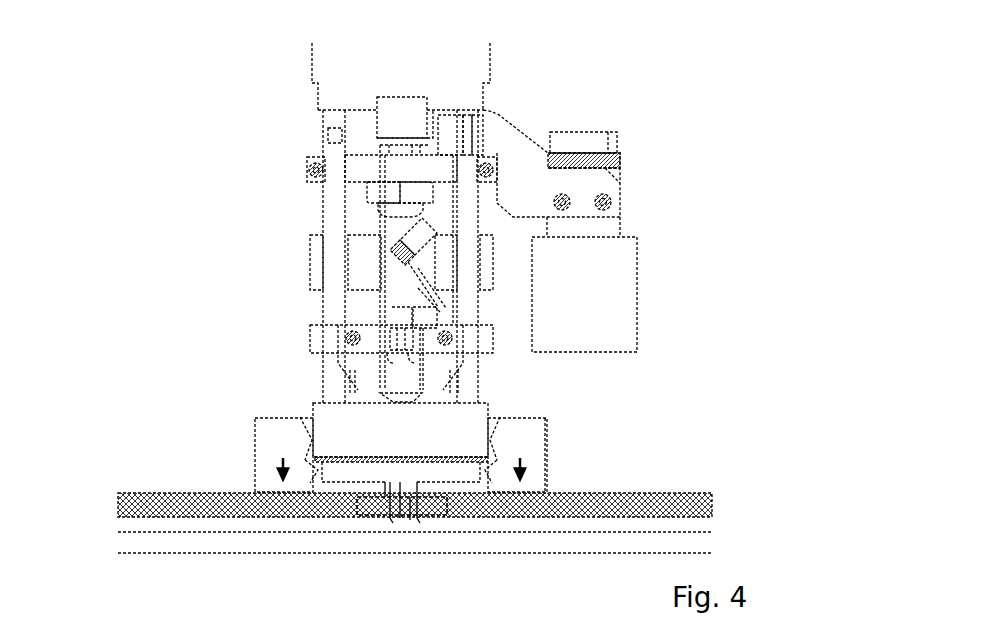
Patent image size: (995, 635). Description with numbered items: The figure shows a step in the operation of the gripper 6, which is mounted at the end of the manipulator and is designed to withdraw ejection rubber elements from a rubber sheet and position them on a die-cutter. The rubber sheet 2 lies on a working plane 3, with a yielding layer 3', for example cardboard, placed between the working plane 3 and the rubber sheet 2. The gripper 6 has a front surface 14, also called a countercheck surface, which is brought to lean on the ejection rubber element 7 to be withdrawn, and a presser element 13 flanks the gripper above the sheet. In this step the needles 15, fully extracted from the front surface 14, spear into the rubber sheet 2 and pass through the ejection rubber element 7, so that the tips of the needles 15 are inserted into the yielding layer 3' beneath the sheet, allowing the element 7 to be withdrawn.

The rubber sheet 2 is at (128, 507).
The working plane 3 is at (391, 583).
The yielding layer 3' is at (458, 511).
The gripper 6 is at (258, 251).
The ejection rubber element 7 is at (447, 512).
The presser element 13 is at (278, 450).
The front surface 14 is at (402, 499).
The needles 15 is at (430, 517).